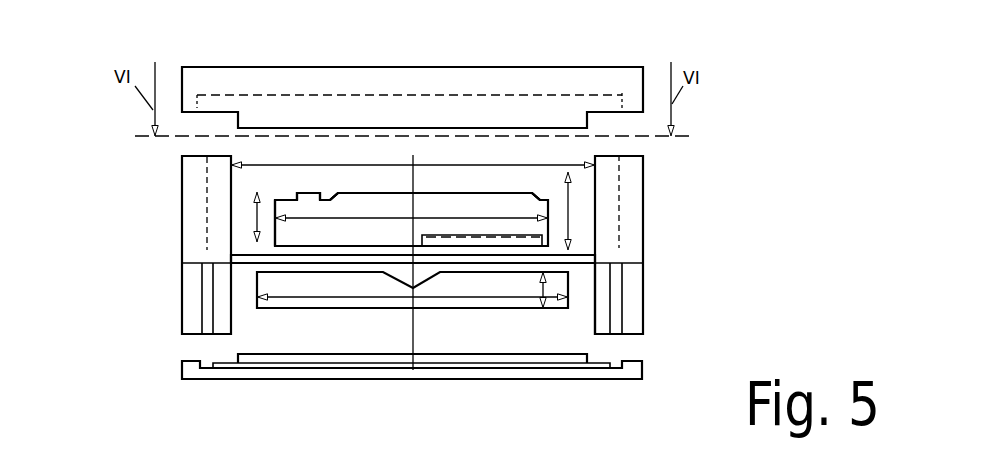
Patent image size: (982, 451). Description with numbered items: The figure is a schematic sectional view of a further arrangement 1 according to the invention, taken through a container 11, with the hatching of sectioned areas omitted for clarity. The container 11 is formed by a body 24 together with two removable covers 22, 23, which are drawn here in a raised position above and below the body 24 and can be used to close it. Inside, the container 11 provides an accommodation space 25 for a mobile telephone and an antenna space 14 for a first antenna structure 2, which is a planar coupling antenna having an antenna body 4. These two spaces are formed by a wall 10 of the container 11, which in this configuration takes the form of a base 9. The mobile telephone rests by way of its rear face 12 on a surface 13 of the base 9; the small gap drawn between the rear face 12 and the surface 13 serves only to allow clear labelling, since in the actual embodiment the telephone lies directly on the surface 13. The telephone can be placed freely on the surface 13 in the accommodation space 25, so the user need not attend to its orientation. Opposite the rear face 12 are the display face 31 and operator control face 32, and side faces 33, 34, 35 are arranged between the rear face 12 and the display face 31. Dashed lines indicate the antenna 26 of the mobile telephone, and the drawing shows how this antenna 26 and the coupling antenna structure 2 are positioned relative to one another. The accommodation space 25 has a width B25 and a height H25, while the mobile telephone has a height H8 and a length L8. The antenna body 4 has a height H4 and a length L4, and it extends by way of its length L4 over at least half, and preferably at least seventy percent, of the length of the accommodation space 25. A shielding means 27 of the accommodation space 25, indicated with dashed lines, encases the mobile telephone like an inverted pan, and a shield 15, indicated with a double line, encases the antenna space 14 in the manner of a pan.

The arrangement 1 is at (694, 56).
The first antenna structure 2 is at (528, 297).
The antenna body 4 is at (473, 290).
The base 9 is at (247, 259).
The wall 10 is at (247, 259).
The container 11 is at (675, 170).
The rear face 12 is at (362, 245).
The surface 13 is at (245, 253).
The antenna space 14 is at (583, 317).
The shield 15 is at (200, 310).
The cover 22 is at (617, 82).
The cover 23 is at (628, 368).
The body 24 is at (628, 267).
The accommodation space 25 is at (582, 193).
The antenna 26 is at (453, 235).
The shielding means 27 is at (513, 95).
The display face 31 is at (367, 192).
The operator control face 32 is at (367, 192).
The side face 33 is at (527, 207).
The side face 34 is at (553, 210).
The side face 35 is at (275, 233).
The length of the mobile telephone L8 is at (317, 218).
The height of the mobile telephone H8 is at (257, 218).
The width of the accommodation space B25 is at (523, 165).
The height of the accommodation space H25 is at (572, 233).
The length of the antenna body L4 is at (355, 300).
The height of the antenna body H4 is at (540, 288).